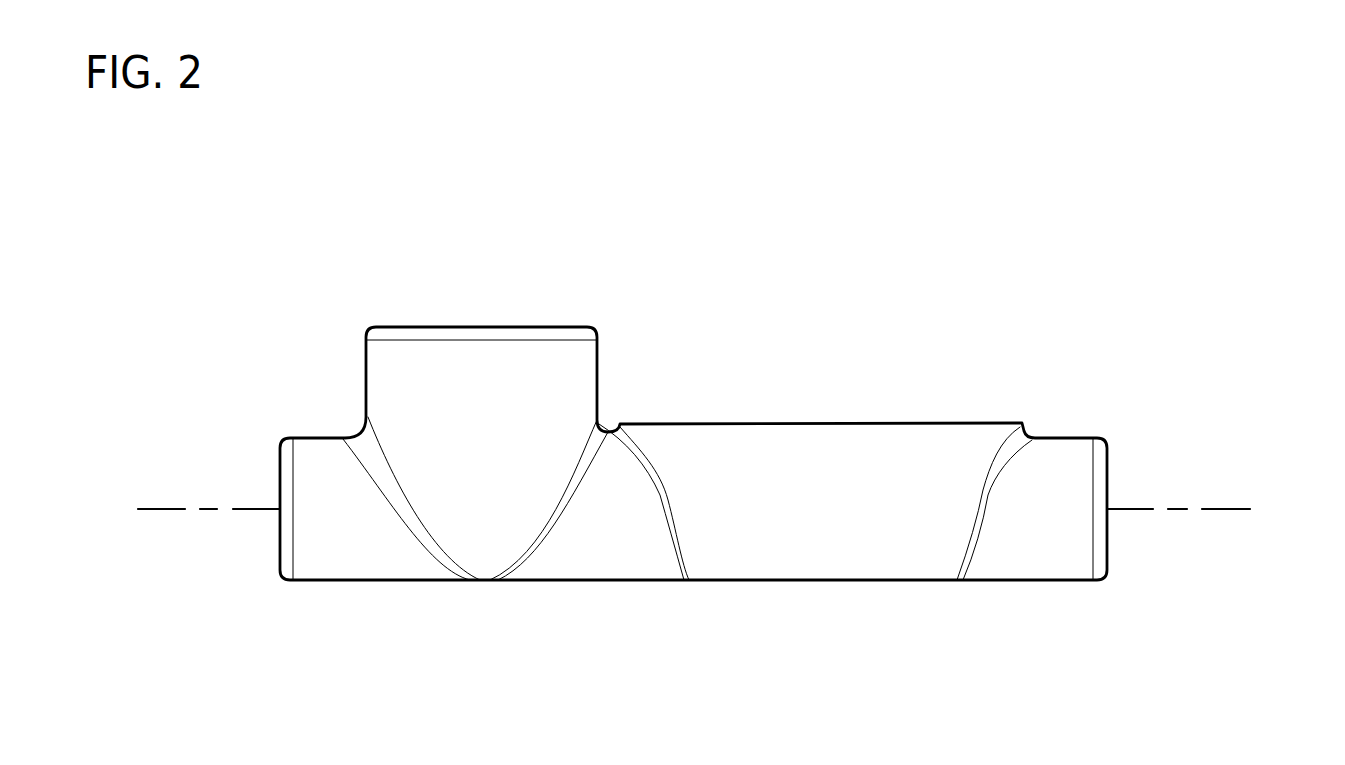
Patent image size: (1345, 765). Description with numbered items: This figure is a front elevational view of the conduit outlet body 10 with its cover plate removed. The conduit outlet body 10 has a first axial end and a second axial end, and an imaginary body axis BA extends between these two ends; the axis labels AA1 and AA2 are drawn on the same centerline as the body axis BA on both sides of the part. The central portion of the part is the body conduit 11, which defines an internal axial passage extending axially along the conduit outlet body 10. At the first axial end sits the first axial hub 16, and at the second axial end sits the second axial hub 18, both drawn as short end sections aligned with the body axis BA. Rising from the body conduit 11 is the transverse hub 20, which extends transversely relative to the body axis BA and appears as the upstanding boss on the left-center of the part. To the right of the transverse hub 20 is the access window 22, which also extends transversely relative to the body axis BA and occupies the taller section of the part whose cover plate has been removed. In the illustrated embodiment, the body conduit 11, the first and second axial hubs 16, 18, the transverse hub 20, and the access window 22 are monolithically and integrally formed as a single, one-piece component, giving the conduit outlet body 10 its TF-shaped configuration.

The conduit outlet body 10 is at (921, 190).
The body conduit 11 is at (610, 553).
The first axial hub 16 is at (280, 557).
The second axial hub 18 is at (1108, 557).
The transverse hub 20 is at (577, 327).
The access window 22 is at (988, 423).
The body axis BA is at (690, 487).
The first rotational axis AA1 is at (699, 515).
The second rotational axis AA2 is at (695, 536).